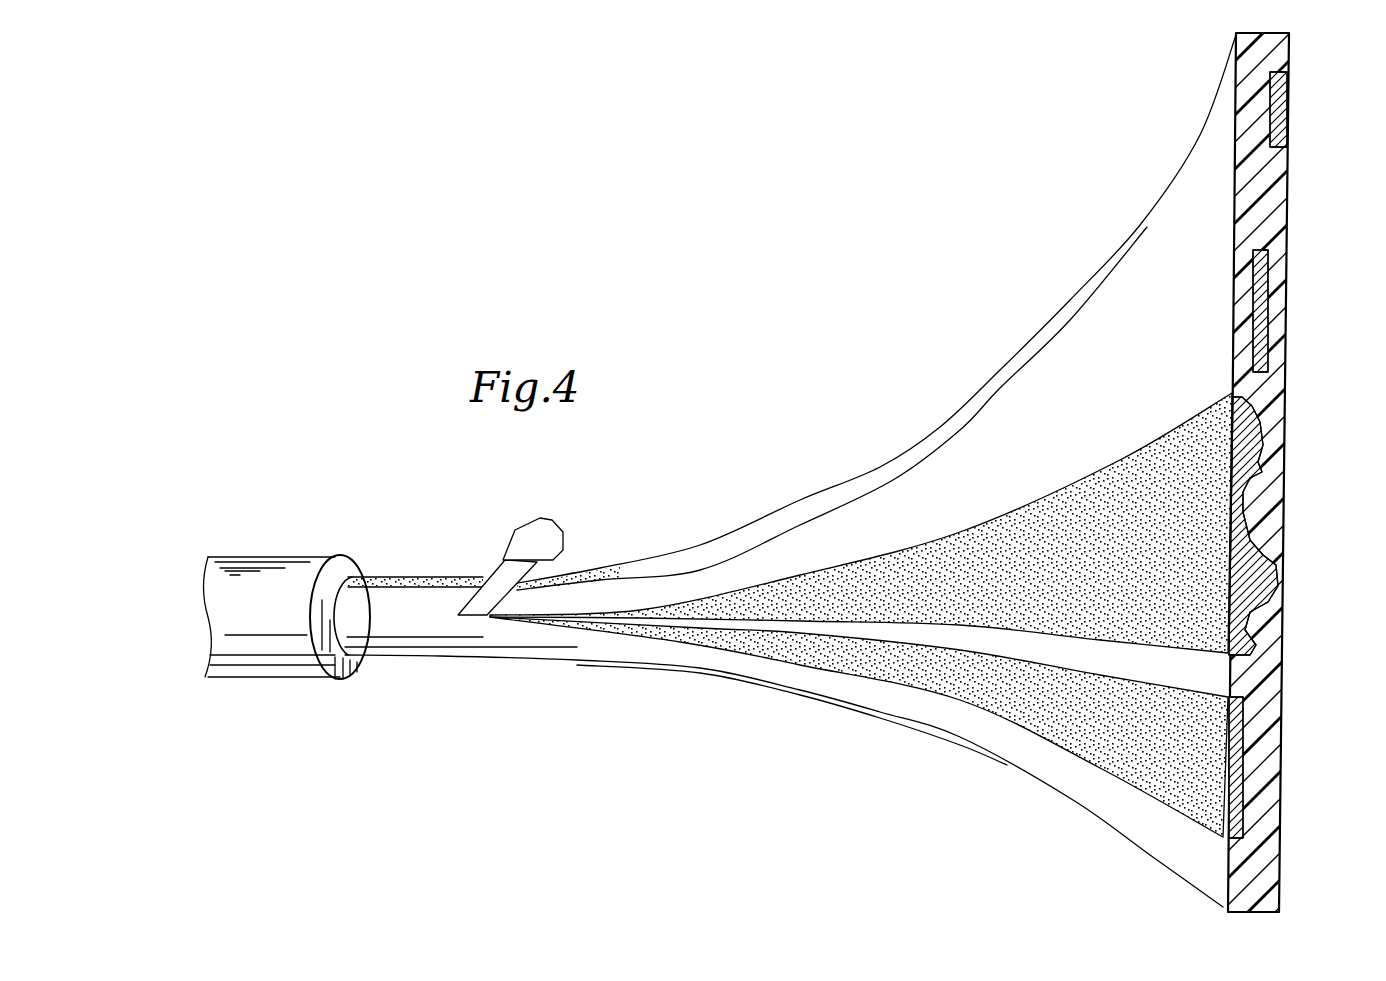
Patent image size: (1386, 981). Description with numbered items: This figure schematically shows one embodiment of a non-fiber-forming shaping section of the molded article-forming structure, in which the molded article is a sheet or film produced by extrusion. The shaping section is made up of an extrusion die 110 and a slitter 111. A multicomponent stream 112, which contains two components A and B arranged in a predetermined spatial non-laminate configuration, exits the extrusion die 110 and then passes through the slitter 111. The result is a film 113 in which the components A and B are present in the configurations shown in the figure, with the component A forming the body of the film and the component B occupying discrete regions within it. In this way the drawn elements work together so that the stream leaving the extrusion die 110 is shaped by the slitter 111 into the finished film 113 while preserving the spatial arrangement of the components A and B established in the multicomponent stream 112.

The extrusion die 110 is at (343, 575).
The slitter 111 is at (553, 520).
The multicomponent stream 112 is at (425, 602).
The film 113 is at (1282, 490).
The component A is at (1277, 218).
The component B is at (1270, 278).